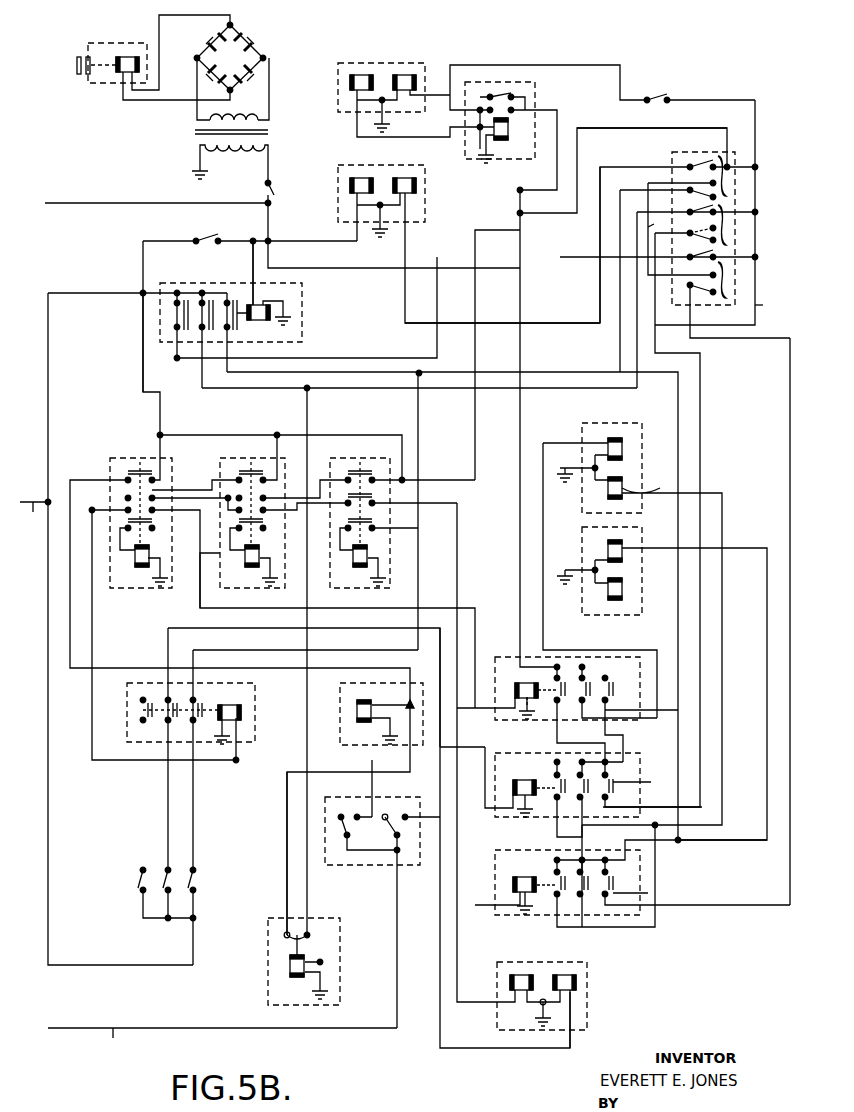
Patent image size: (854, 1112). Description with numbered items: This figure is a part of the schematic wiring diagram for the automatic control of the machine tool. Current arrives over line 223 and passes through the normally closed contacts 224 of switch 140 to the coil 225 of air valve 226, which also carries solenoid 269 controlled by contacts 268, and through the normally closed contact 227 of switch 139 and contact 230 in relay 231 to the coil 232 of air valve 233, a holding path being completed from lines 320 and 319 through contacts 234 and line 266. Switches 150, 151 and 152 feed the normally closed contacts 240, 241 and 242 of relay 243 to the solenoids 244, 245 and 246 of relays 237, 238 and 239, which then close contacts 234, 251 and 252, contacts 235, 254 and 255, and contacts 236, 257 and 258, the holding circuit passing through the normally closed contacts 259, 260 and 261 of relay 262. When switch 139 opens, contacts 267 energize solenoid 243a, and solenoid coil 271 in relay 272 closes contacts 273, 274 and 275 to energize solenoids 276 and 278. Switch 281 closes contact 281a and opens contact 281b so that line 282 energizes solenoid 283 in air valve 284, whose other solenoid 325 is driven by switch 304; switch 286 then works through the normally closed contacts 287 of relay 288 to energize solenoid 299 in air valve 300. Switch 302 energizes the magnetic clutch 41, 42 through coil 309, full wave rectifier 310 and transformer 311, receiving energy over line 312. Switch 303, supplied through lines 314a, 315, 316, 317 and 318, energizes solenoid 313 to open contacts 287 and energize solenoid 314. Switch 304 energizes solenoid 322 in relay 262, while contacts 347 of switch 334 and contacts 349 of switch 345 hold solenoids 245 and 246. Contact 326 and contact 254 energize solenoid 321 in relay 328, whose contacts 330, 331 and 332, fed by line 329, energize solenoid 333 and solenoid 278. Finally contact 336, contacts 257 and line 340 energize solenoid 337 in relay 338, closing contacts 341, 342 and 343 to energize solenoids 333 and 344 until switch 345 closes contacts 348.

The magnetic clutch 41 is at (115, 43).
The magnetic clutch 42 is at (77, 65).
The coil 309 is at (125, 71).
The full wave rectifier 310 is at (228, 50).
The transformer 311 is at (195, 132).
The line 312 is at (104, 201).
The switch 302 is at (276, 190).
The switch 304 is at (207, 239).
The air valve 300 is at (338, 90).
The solenoid 314 is at (362, 75).
The solenoid 299 is at (403, 75).
The normally closed contacts 287 is at (497, 94).
The relay 288 is at (536, 88).
The solenoid 313 is at (501, 140).
The normally closed switch 286 is at (520, 207).
The air valve 284 is at (336, 172).
The solenoid 325 is at (360, 178).
The solenoid 283 is at (405, 178).
The switch 303 is at (657, 96).
The line 314a is at (728, 100).
The line 315 is at (648, 132).
The contacts 349 is at (706, 164).
The contacts 348 is at (705, 183).
The switch 345 is at (728, 190).
The normally closed contacts 347 is at (697, 203).
The switch 334 is at (728, 234).
The contact 281b is at (659, 249).
The contact 281a is at (733, 299).
The switch 281 is at (727, 291).
The line 282 is at (776, 311).
The relay 262 is at (306, 308).
The normally closed contacts 259 is at (177, 313).
The normally closed contacts 260 is at (202, 301).
The normally closed contacts 261 is at (234, 300).
The solenoid 322 is at (257, 320).
The line 319 is at (143, 365).
The line 316 is at (472, 303).
The line 320 is at (34, 518).
The line 318 is at (235, 435).
The line 317 is at (348, 435).
The line 329 is at (521, 415).
The relay 237 is at (122, 592).
The normally open contacts 234 is at (135, 466).
The contacts 251 is at (128, 498).
The contact 326 is at (155, 492).
The contacts 252 is at (142, 530).
The solenoid 244 is at (132, 567).
The relay 238 is at (276, 590).
The normally open contacts 235 is at (258, 466).
The contact 336 is at (240, 499).
The contact 254 is at (262, 526).
The contacts 255 is at (260, 525).
The solenoid 245 is at (242, 567).
The relay 239 is at (370, 590).
The normally open contacts 236 is at (360, 466).
The contacts 257 is at (366, 508).
The contacts 258 is at (367, 528).
The solenoid 246 is at (368, 555).
The line 340 is at (458, 541).
The solenoid 344 is at (616, 438).
The solenoid 278 is at (652, 643).
The solenoid 333 is at (608, 551).
The solenoid 276 is at (622, 586).
The relay 338 is at (532, 678).
The solenoid 337 is at (520, 708).
The contacts 341 is at (555, 688).
The contacts 342 is at (584, 681).
The contacts 343 is at (608, 685).
The relay 328 is at (545, 768).
The solenoid 321 is at (522, 774).
The contacts 330 is at (575, 786).
The contacts 331 is at (583, 774).
The contacts 332 is at (652, 783).
The relay 272 is at (523, 848).
The solenoid coil 271 is at (530, 876).
The contact 273 is at (572, 900).
The contact 274 is at (608, 881).
The contact 275 is at (696, 881).
The line 266 is at (350, 643).
The air valve 233 is at (340, 733).
The coil 232 is at (357, 711).
The relay 243 is at (256, 715).
The solenoid 243a is at (238, 707).
The normally closed relay contacts 240 is at (147, 712).
The normally closed relay contacts 241 is at (177, 722).
The normally closed relay contacts 242 is at (201, 703).
The normally closed contact 227 is at (325, 803).
The normally closed contacts 224 is at (367, 832).
The switch 139 is at (338, 836).
The contacts 268 is at (408, 832).
The contacts 267 is at (352, 850).
The switch 140 is at (403, 838).
The switch 152 is at (138, 880).
The switch 151 is at (168, 885).
The switch 150 is at (196, 880).
The relay 231 is at (290, 968).
The contact 230 is at (285, 938).
The line 223 is at (222, 1048).
The air valve 226 is at (588, 1002).
The coil 225 is at (525, 975).
The solenoid 269 is at (577, 982).